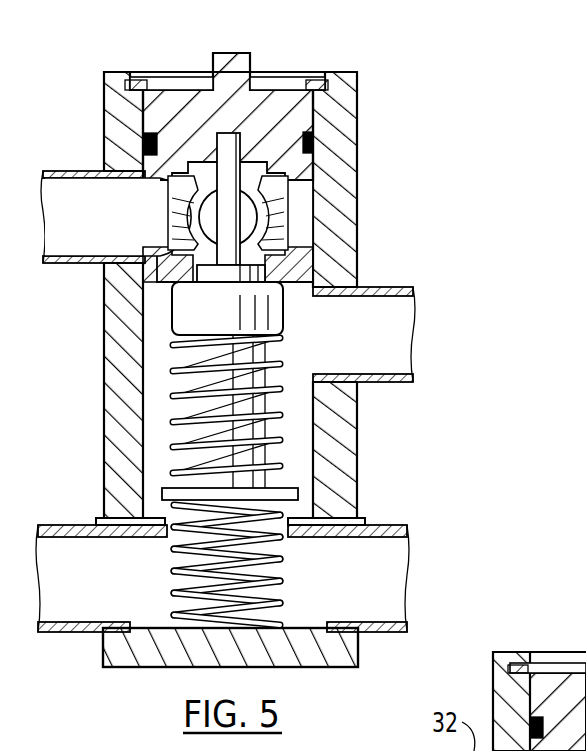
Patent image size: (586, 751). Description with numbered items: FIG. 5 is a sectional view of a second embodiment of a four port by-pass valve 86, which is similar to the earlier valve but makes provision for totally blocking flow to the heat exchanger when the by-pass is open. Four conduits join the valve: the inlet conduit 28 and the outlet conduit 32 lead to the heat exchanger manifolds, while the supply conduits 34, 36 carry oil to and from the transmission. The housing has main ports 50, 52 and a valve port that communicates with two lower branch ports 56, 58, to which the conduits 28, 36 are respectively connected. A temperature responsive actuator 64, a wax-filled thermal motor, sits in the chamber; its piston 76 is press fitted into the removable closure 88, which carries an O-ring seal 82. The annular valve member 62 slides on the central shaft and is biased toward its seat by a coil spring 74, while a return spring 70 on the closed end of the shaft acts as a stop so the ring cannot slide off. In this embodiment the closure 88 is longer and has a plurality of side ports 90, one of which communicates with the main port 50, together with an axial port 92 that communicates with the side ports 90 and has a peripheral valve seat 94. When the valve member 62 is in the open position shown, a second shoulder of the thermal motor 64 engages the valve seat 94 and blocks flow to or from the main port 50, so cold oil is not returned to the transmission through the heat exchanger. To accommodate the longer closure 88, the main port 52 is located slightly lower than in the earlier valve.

The inlet conduit 28 is at (70, 528).
The outlet conduit 32 is at (88, 168).
The supply conduit 34 is at (378, 287).
The supply conduit 36 is at (365, 525).
The main port 50 is at (117, 238).
The main port 52 is at (335, 345).
The lower branch port 56 is at (150, 585).
The lower branch port 58 is at (330, 585).
The valve member 62 is at (165, 493).
The temperature responsive actuator 64 is at (188, 318).
The return spring 70 is at (206, 614).
The coil spring 74 is at (185, 402).
The piston 76 is at (234, 177).
The O-ring seal 82 is at (340, 150).
The by-pass valve 86 is at (462, 127).
The removable closure 88 is at (290, 105).
The side ports 90 is at (187, 197).
The axial port 92 is at (200, 273).
The peripheral valve seat 94 is at (305, 298).